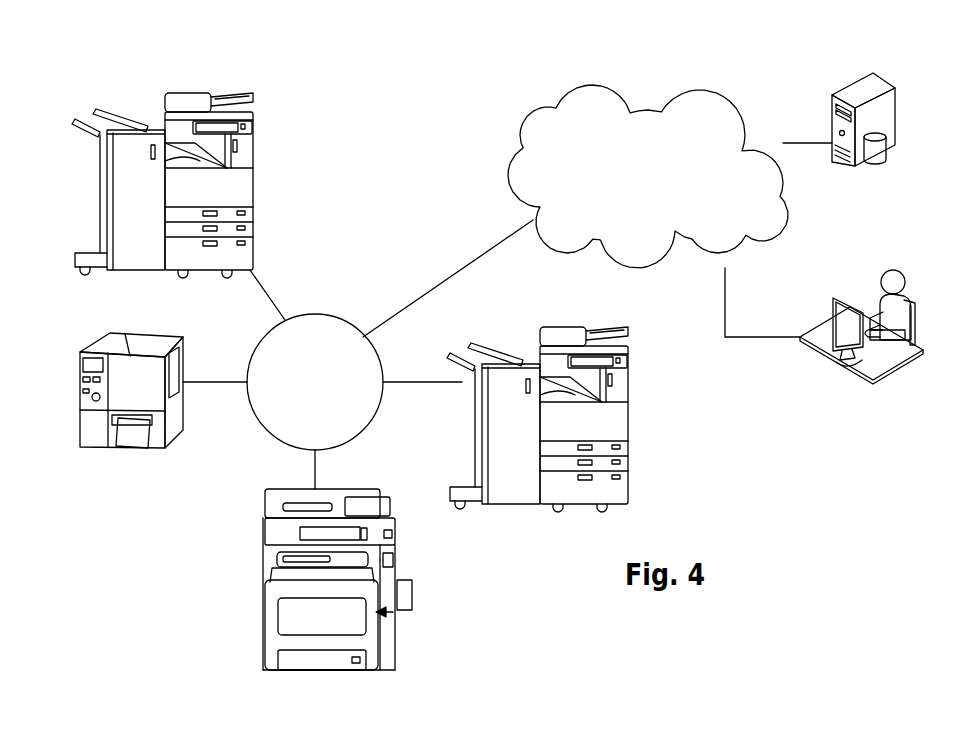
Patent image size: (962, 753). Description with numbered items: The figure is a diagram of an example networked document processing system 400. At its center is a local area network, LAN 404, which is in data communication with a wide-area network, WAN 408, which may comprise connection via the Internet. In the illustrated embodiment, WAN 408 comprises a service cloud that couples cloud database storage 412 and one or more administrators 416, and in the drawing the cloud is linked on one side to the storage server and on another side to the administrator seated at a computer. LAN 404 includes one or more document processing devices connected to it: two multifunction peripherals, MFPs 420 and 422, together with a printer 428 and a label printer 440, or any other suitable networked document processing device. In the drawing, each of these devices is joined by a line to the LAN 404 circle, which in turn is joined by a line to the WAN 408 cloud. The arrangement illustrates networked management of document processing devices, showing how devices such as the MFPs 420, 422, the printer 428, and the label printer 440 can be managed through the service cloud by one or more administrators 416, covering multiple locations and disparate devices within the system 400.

The networked document processing system 400 is at (875, 58).
The LAN 404 is at (317, 313).
The WAN 408 is at (713, 90).
The cloud database storage 412 is at (897, 117).
The administrators 416 is at (900, 370).
The MFP 420 is at (253, 187).
The MFP 422 is at (628, 422).
The printer 428 is at (395, 643).
The label printer 440 is at (172, 437).